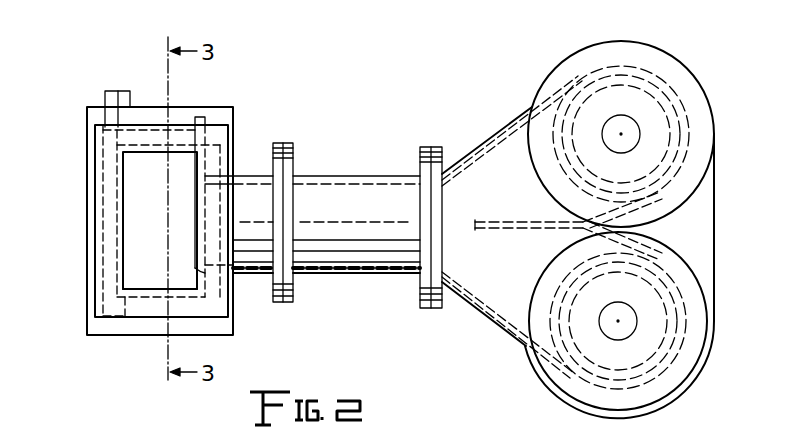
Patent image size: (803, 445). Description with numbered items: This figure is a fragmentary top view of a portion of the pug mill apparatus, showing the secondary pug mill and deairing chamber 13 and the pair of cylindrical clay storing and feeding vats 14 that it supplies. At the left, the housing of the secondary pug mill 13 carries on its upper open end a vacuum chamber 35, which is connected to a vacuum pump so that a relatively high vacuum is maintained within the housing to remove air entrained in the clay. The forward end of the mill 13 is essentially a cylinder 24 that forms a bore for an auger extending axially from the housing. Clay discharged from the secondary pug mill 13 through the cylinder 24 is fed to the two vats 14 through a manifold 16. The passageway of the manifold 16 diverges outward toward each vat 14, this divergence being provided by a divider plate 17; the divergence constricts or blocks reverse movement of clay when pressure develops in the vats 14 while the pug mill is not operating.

The secondary pug mill and deairing chamber 13 is at (247, 150).
The clay storing and feeding vats 14 is at (656, 46).
The manifold 16 is at (481, 144).
The divider plate 17 is at (497, 233).
The cylinder 24 is at (334, 176).
The vacuum chamber 35 is at (185, 283).